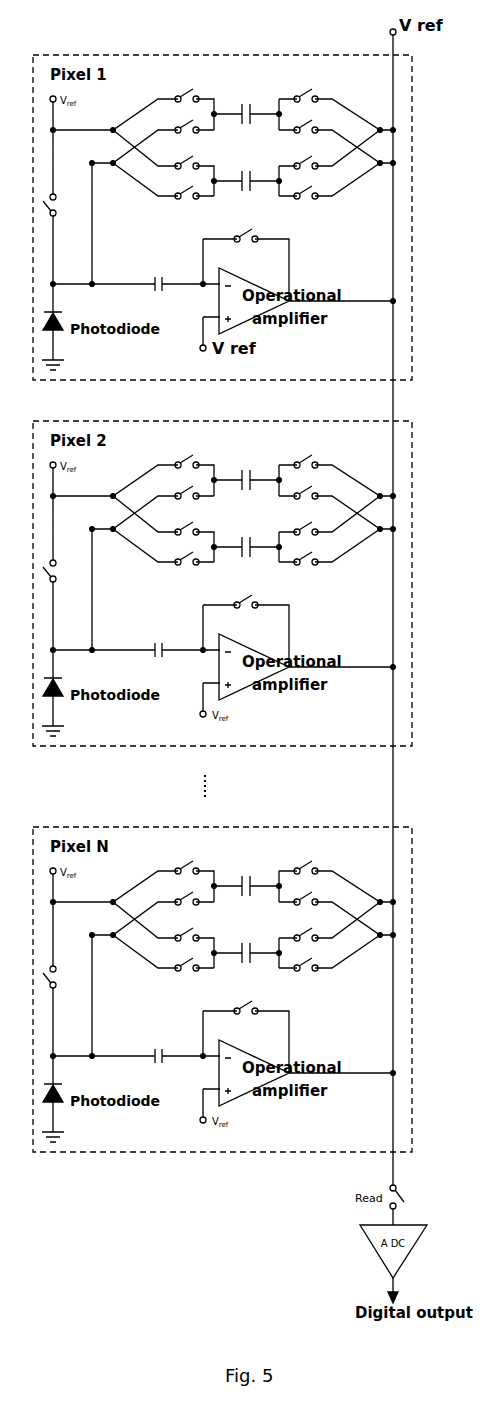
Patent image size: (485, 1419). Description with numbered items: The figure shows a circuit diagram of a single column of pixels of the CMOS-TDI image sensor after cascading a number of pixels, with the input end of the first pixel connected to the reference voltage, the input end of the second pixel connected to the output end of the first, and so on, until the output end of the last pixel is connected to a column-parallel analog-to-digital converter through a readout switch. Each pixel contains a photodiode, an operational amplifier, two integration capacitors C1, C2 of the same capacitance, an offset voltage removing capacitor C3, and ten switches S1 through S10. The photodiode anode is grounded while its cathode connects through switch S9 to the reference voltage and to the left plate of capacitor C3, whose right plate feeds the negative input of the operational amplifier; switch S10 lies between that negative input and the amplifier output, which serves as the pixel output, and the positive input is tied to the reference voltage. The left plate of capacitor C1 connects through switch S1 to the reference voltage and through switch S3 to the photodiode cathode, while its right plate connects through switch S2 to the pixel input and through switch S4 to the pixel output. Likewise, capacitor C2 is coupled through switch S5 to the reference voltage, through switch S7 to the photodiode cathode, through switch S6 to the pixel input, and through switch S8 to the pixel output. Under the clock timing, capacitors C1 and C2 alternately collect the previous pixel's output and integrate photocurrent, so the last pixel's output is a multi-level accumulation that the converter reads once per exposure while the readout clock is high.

The switch S1 is at (187, 488).
The switch S2 is at (306, 488).
The switch S3 is at (187, 520).
The switch S4 is at (306, 520).
The switch S5 is at (187, 555).
The switch S6 is at (306, 555).
The switch S7 is at (187, 586).
The switch S8 is at (306, 586).
The switch S9 is at (60, 591).
The switch S10 is at (246, 629).
The integration capacitor C1 is at (247, 510).
The integration capacitor C2 is at (247, 576).
The offset voltage removing capacitor C3 is at (155, 681).